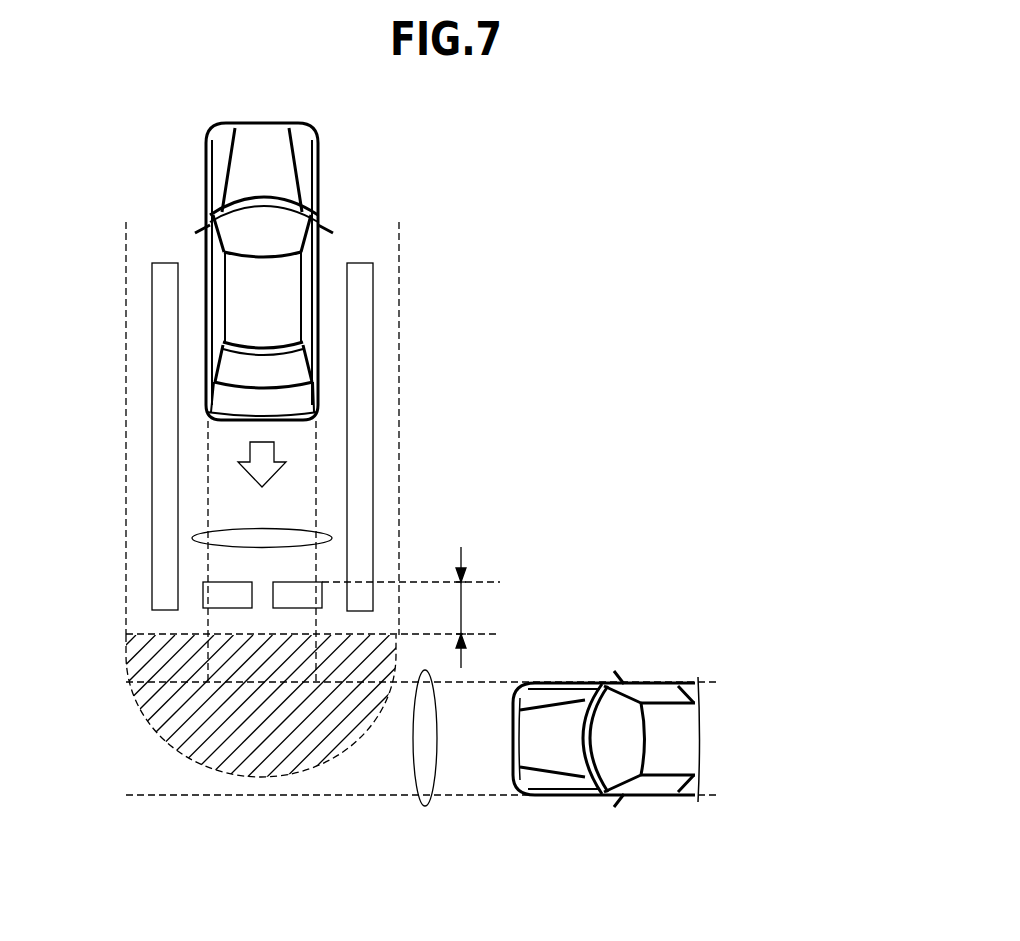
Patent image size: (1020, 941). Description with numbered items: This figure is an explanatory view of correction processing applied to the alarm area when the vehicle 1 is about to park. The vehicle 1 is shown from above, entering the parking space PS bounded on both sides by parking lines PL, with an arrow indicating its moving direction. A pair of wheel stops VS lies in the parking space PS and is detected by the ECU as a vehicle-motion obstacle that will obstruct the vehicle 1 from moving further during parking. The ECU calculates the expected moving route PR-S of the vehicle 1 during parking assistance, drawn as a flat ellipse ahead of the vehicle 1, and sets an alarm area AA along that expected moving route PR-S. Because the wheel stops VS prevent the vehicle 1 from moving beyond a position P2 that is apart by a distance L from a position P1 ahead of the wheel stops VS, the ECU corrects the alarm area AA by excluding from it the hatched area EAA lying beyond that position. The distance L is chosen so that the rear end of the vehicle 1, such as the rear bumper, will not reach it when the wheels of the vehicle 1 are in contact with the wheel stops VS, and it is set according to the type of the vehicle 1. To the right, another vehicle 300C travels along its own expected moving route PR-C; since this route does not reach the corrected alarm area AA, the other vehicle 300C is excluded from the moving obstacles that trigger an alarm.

The vehicle 1 is at (288, 122).
The parking line PL is at (152, 302).
The parking space PS is at (240, 497).
The expected moving route of the vehicle PR-S is at (197, 538).
The wheel stop VS is at (205, 609).
The position P1 is at (499, 561).
The position P2 is at (499, 612).
The distance L is at (463, 590).
The alarm area AA is at (165, 743).
The excluded area EAA is at (278, 745).
The expected moving route of the moving obstacle PR-C is at (423, 807).
The another vehicle 300C is at (643, 797).